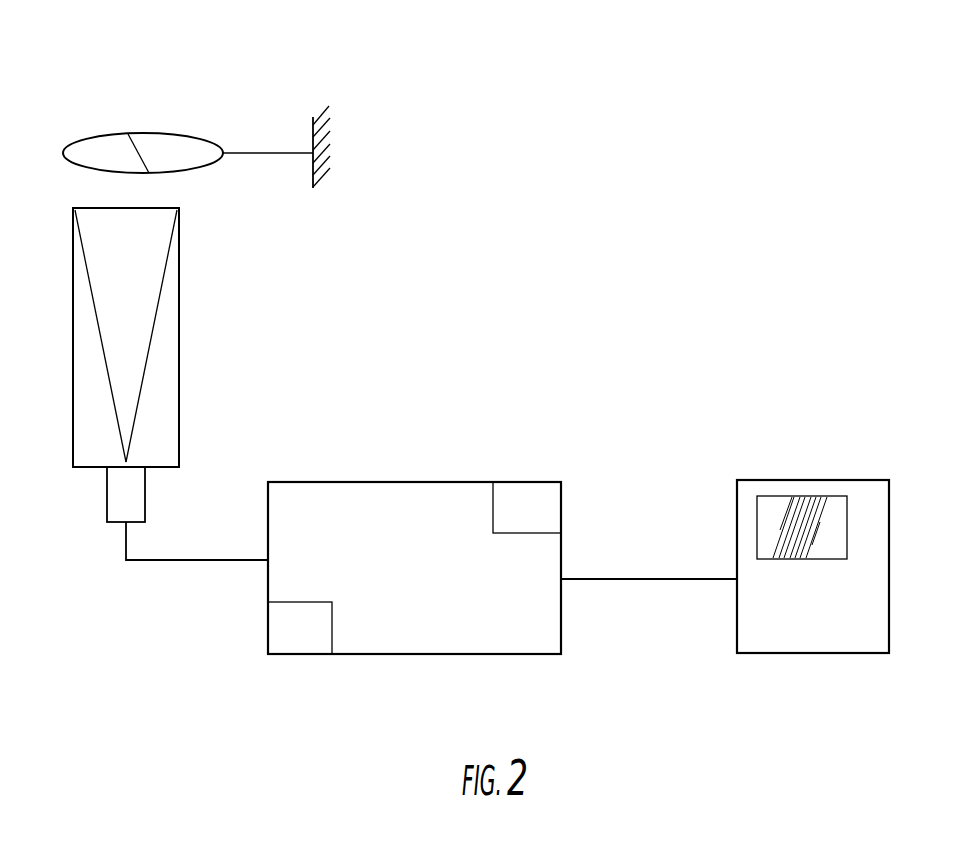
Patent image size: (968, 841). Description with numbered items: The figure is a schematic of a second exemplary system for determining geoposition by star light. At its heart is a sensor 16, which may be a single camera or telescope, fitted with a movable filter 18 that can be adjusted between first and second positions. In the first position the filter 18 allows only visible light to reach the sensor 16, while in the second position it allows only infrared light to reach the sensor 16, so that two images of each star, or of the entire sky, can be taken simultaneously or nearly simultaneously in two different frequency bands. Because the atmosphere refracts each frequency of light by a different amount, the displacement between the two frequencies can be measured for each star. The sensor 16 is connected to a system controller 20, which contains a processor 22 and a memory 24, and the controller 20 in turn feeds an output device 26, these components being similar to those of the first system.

The sensor 16 is at (181, 340).
The movable filter 18 is at (146, 111).
The system controller 20 is at (478, 645).
The processor 22 is at (297, 633).
The memory 24 is at (533, 495).
The output device 26 is at (900, 517).